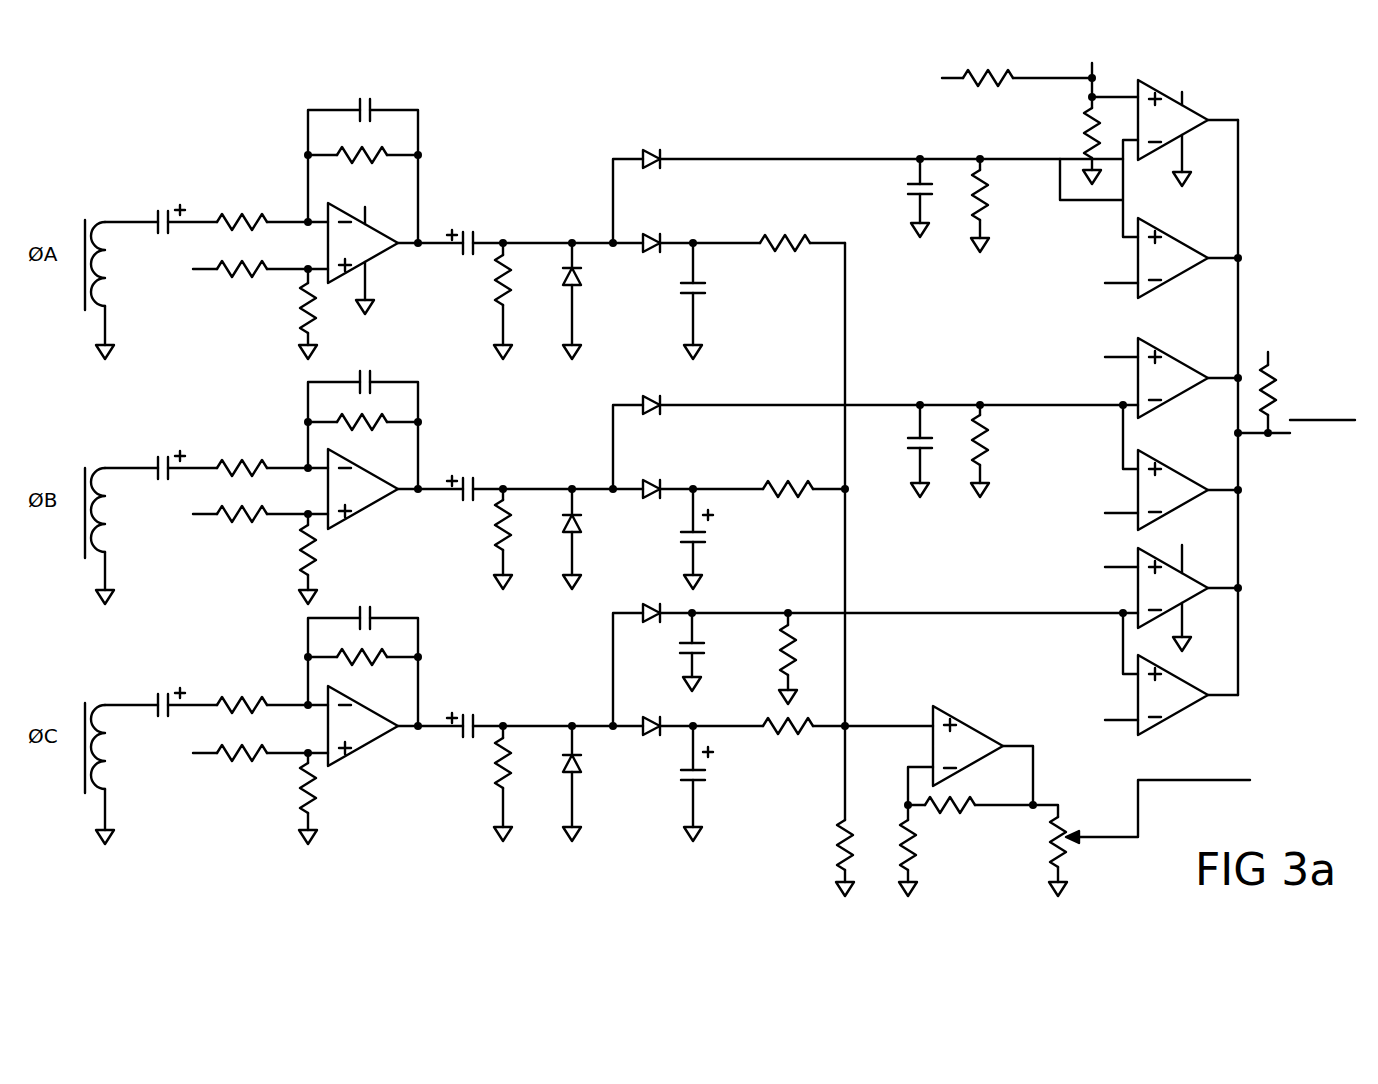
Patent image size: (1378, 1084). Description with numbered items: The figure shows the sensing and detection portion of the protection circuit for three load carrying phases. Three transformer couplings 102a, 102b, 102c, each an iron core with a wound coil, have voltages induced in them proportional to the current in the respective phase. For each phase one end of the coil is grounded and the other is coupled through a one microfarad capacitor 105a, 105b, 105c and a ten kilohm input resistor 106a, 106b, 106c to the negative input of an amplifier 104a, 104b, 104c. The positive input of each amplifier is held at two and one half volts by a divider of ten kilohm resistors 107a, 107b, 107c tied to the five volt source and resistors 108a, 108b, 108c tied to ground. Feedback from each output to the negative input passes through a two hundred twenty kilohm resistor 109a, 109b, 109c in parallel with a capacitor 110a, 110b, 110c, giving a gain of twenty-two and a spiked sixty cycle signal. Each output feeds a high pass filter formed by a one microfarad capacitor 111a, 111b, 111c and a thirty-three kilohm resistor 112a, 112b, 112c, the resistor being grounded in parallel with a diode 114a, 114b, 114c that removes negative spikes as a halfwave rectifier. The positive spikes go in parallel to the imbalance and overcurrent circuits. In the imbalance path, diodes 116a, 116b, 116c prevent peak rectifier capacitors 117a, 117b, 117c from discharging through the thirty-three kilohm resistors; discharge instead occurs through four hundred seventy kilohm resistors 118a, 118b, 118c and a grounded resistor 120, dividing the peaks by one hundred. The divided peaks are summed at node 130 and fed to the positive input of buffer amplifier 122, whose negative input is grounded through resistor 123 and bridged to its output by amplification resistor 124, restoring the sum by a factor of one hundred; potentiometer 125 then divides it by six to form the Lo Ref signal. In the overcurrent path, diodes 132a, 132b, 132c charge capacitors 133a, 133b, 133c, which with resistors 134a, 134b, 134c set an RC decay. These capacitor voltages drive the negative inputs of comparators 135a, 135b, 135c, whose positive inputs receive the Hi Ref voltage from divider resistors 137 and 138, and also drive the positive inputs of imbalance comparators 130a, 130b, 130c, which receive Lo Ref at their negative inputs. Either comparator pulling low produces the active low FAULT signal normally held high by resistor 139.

The transformer coupling 102a is at (113, 267).
The transformer coupling 102b is at (113, 520).
The transformer coupling 102c is at (112, 755).
The amplifier 104a is at (383, 257).
The amplifier 104b is at (353, 515).
The amplifier 104c is at (360, 752).
The one microfarad capacitor 105a is at (180, 203).
The one microfarad capacitor 105b is at (175, 452).
The one microfarad capacitor 105c is at (177, 690).
The 10k ohm input resistor 106a is at (267, 215).
The 10k ohm input resistor 106b is at (265, 462).
The 10k ohm input resistor 106c is at (262, 700).
The 10k ohm resistor 107a is at (238, 287).
The 10k ohm resistor 107b is at (242, 523).
The 10k ohm resistor 107c is at (240, 768).
The 10k ohm resistor 108a is at (300, 325).
The 10k ohm resistor 108b is at (298, 572).
The 10k ohm resistor 108c is at (303, 812).
The 220k ohm resistor 109a is at (352, 150).
The 220k ohm resistor 109b is at (377, 418).
The 220k ohm resistor 109c is at (378, 650).
The 0.0033 microfarad capacitor 110a is at (350, 95).
The 0.0033 microfarad capacitor 110b is at (380, 367).
The 0.0033 microfarad capacitor 110c is at (378, 612).
The 1 microfarad capacitor 111a is at (483, 225).
The 1 microfarad capacitor 111b is at (485, 475).
The 1 microfarad capacitor 111c is at (485, 712).
The 33k ohm resistor 112a is at (497, 288).
The 33k ohm resistor 112b is at (495, 545).
The 33k ohm resistor 112c is at (495, 790).
The diode 114a is at (583, 280).
The diode 114b is at (583, 537).
The diode 114c is at (583, 775).
The diode 116a is at (667, 228).
The diode 116b is at (667, 482).
The diode 116c is at (640, 735).
The capacitor 117a is at (703, 300).
The capacitor 117b is at (707, 550).
The capacitor 117c is at (702, 785).
The 470k ohm voltage divider resistor 118a is at (790, 252).
The 470k ohm voltage divider resistor 118b is at (758, 480).
The 470k ohm voltage divider resistor 118c is at (775, 738).
The 4.7k ohm voltage divider resistor 120 is at (840, 855).
The buffer amplifier 122 is at (970, 712).
The 4.7k ohm resistor 123 is at (903, 827).
The 470k ohm amplification resistor 124 is at (953, 810).
The voltage divider or potentiometer 125 is at (1070, 855).
The node 130 is at (852, 710).
The comparator 130a is at (1165, 236).
The comparator 130b is at (1160, 463).
The comparator 130c is at (1165, 676).
The diode 132a is at (662, 150).
The diode 132b is at (662, 405).
The diode 132c is at (662, 613).
The 0.47 microfarad capacitor 133a is at (907, 200).
The 0.47 microfarad capacitor 133b is at (905, 458).
The 0.47 microfarad capacitor 133c is at (682, 658).
The 4.7M ohm resistor 134a is at (993, 212).
The 4.7M ohm resistor 134b is at (972, 455).
The 4.7M ohm resistor 134c is at (782, 678).
The voltage comparator 135a is at (1193, 108).
The voltage comparator 135b is at (1155, 348).
The voltage comparator 135c is at (1182, 592).
The voltage divider resistor 137 is at (970, 88).
The voltage divider resistor 138 is at (1080, 150).
The 5.6k ohm resistor 139 is at (1280, 372).